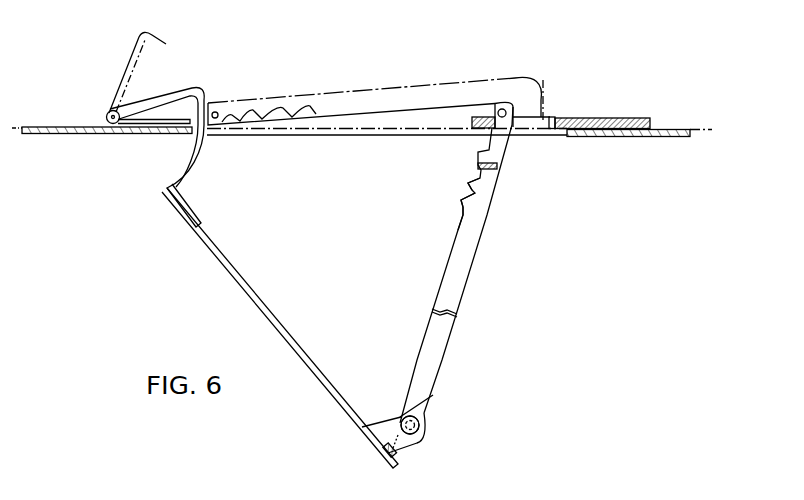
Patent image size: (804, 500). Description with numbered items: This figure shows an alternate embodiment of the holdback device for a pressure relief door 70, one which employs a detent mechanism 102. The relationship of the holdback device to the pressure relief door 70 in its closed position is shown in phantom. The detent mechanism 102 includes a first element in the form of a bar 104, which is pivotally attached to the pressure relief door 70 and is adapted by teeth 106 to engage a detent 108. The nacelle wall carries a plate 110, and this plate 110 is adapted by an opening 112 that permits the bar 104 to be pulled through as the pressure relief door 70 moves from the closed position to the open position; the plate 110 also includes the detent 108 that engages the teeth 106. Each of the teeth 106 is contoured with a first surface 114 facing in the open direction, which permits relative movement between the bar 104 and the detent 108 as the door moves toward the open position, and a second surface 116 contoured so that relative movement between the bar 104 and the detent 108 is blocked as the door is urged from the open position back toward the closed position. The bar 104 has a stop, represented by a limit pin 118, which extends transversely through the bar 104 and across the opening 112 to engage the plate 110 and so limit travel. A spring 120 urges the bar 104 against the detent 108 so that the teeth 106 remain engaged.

The pressure relief door 70 is at (268, 310).
The detent mechanism 102 is at (506, 158).
The bar 104 is at (386, 88).
The teeth 106 is at (478, 176).
The detent 108 is at (471, 121).
The plate 110 is at (641, 118).
The opening 112 is at (552, 118).
The first surface 114 is at (470, 191).
The second surface 116 is at (462, 204).
The limit pin 118 is at (503, 103).
The spring 120 is at (427, 398).